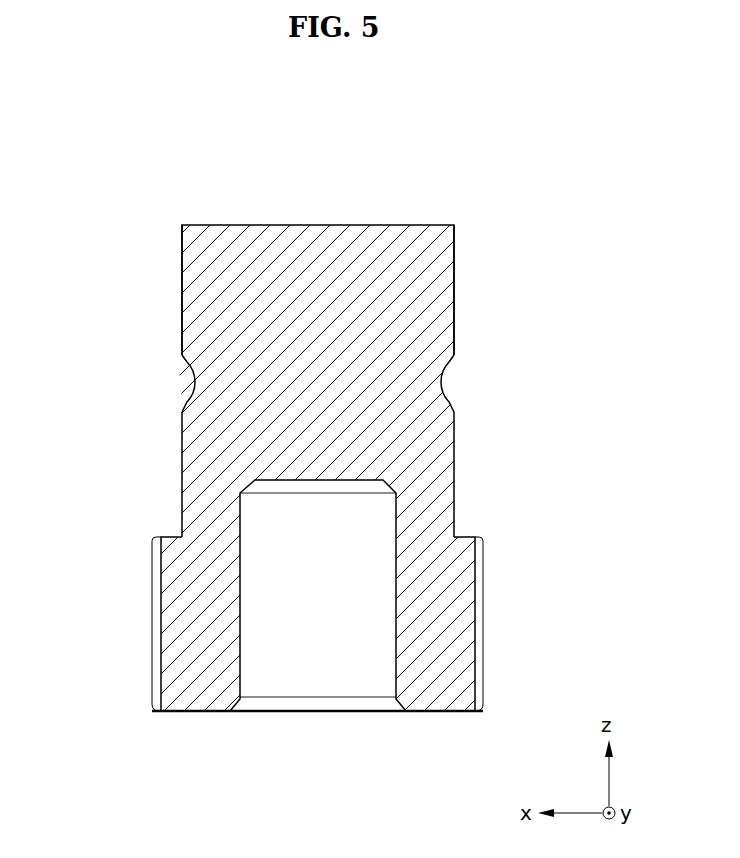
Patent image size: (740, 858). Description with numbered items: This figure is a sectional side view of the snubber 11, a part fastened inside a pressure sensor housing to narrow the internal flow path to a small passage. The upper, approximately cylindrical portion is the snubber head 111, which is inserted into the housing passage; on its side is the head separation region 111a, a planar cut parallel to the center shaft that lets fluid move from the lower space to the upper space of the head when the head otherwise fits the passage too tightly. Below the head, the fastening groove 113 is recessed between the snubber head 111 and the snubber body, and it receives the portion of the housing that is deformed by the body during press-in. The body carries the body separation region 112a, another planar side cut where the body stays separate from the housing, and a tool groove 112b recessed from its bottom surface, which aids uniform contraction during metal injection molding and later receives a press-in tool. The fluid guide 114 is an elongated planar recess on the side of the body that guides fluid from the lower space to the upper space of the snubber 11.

The snubber 11 is at (332, 130).
The snubber head 111 is at (319, 238).
The head separation region 111a is at (182, 292).
The body separation region 112a is at (182, 470).
The tool groove 112b is at (325, 641).
The fastening groove 113 is at (443, 395).
The fluid guide 114 is at (152, 622).